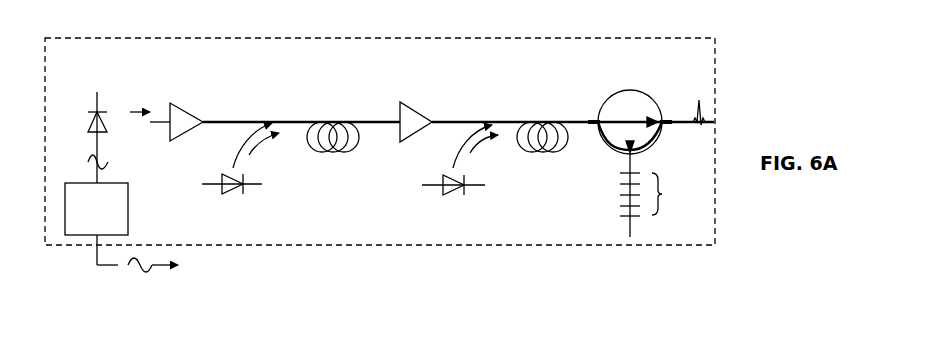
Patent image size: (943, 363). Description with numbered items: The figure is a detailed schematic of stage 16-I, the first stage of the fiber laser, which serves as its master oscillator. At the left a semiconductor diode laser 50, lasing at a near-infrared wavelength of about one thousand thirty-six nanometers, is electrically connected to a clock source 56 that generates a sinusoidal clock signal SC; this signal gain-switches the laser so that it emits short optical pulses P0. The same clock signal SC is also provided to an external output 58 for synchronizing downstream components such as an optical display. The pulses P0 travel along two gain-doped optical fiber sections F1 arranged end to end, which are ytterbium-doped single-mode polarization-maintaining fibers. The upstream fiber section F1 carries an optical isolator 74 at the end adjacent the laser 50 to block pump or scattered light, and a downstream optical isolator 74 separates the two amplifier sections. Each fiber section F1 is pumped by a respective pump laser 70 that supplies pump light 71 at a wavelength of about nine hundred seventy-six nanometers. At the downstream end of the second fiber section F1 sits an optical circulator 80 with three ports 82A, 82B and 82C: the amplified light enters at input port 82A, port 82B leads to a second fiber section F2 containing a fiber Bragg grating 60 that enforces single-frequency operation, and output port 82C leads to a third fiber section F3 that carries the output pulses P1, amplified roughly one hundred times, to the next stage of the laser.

The stage 16-I is at (380, 141).
The semiconductor diode laser 50 is at (72, 102).
The clock source 56 is at (96, 209).
The external output 58 is at (110, 265).
The fiber Bragg grating 60 is at (653, 203).
The pump laser 70 is at (236, 196).
The pump light 71 is at (249, 155).
The optical isolator 74 is at (187, 102).
The optical circulator 80 is at (600, 108).
The input port 82A is at (596, 121).
The circulator port 82B is at (598, 126).
The output port 82C is at (660, 126).
The optical pulses P0 is at (124, 135).
The output pulses P1 is at (703, 102).
The gain-doped optical fiber section F1 is at (227, 121).
The second fiber section F2 is at (627, 226).
The third section of optical fiber F3 is at (688, 121).
The clock signal SC is at (100, 157).